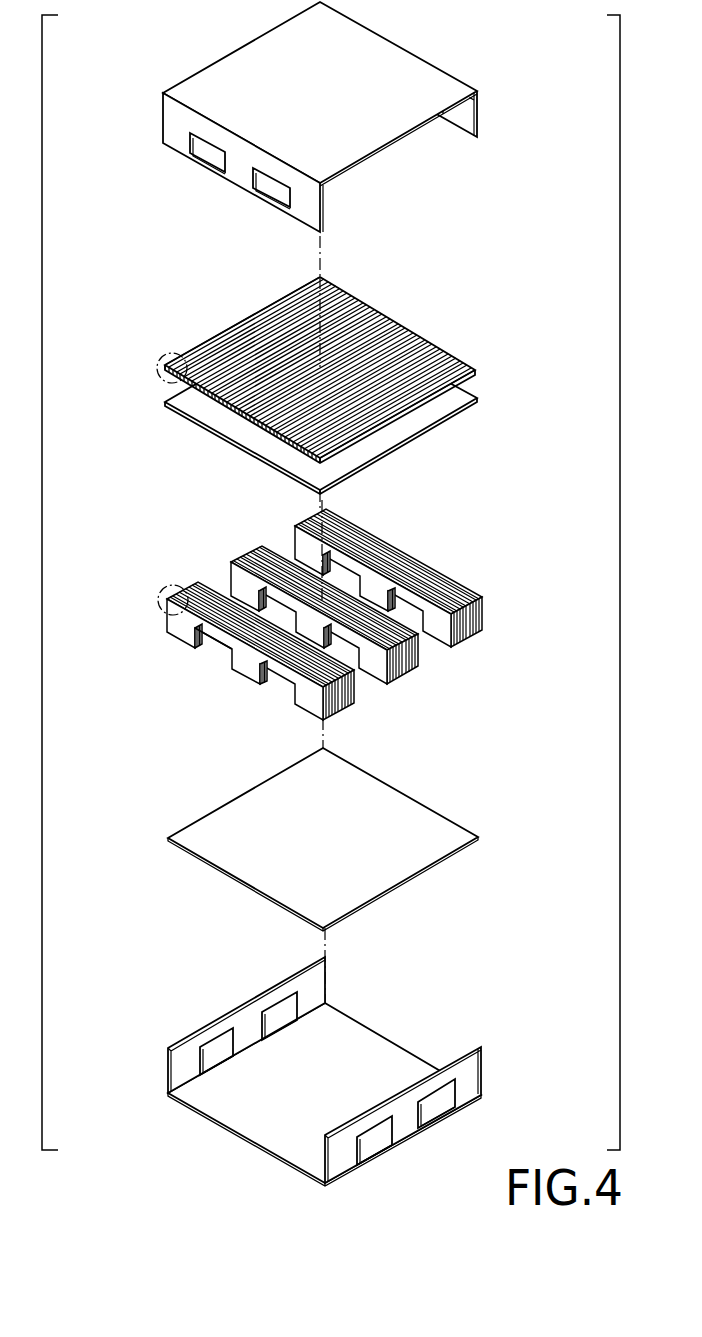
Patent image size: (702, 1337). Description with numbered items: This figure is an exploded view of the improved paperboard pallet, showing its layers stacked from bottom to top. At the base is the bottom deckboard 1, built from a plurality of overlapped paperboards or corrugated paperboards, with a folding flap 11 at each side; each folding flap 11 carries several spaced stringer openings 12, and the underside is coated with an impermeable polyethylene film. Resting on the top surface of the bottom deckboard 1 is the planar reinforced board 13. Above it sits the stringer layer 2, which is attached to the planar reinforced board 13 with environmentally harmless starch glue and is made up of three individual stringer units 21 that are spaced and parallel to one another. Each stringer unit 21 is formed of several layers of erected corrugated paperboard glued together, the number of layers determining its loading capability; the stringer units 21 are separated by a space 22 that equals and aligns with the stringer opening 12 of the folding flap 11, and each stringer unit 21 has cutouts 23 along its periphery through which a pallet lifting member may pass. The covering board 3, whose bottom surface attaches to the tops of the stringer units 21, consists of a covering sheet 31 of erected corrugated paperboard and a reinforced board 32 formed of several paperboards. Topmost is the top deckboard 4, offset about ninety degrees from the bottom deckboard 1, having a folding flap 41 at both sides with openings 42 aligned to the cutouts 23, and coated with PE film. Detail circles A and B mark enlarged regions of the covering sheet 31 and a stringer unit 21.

The bottom deckboard 1 is at (324, 1083).
The folding flap 11 is at (246, 1025).
The stringer opening 12 is at (216, 1051).
The planar reinforced board 13 is at (417, 858).
The stringer layer 2 is at (331, 615).
The stringer unit 21 is at (229, 651).
The space 22 is at (367, 680).
The cutout 23 is at (212, 653).
The covering board 3 is at (329, 380).
The covering sheet 31 is at (412, 327).
The reinforced board 32 is at (458, 411).
The top deckboard 4 is at (281, 117).
The folding flap 41 is at (203, 162).
The opening 42 is at (205, 150).
The detail A circle A is at (158, 366).
The detail B circle B is at (159, 600).